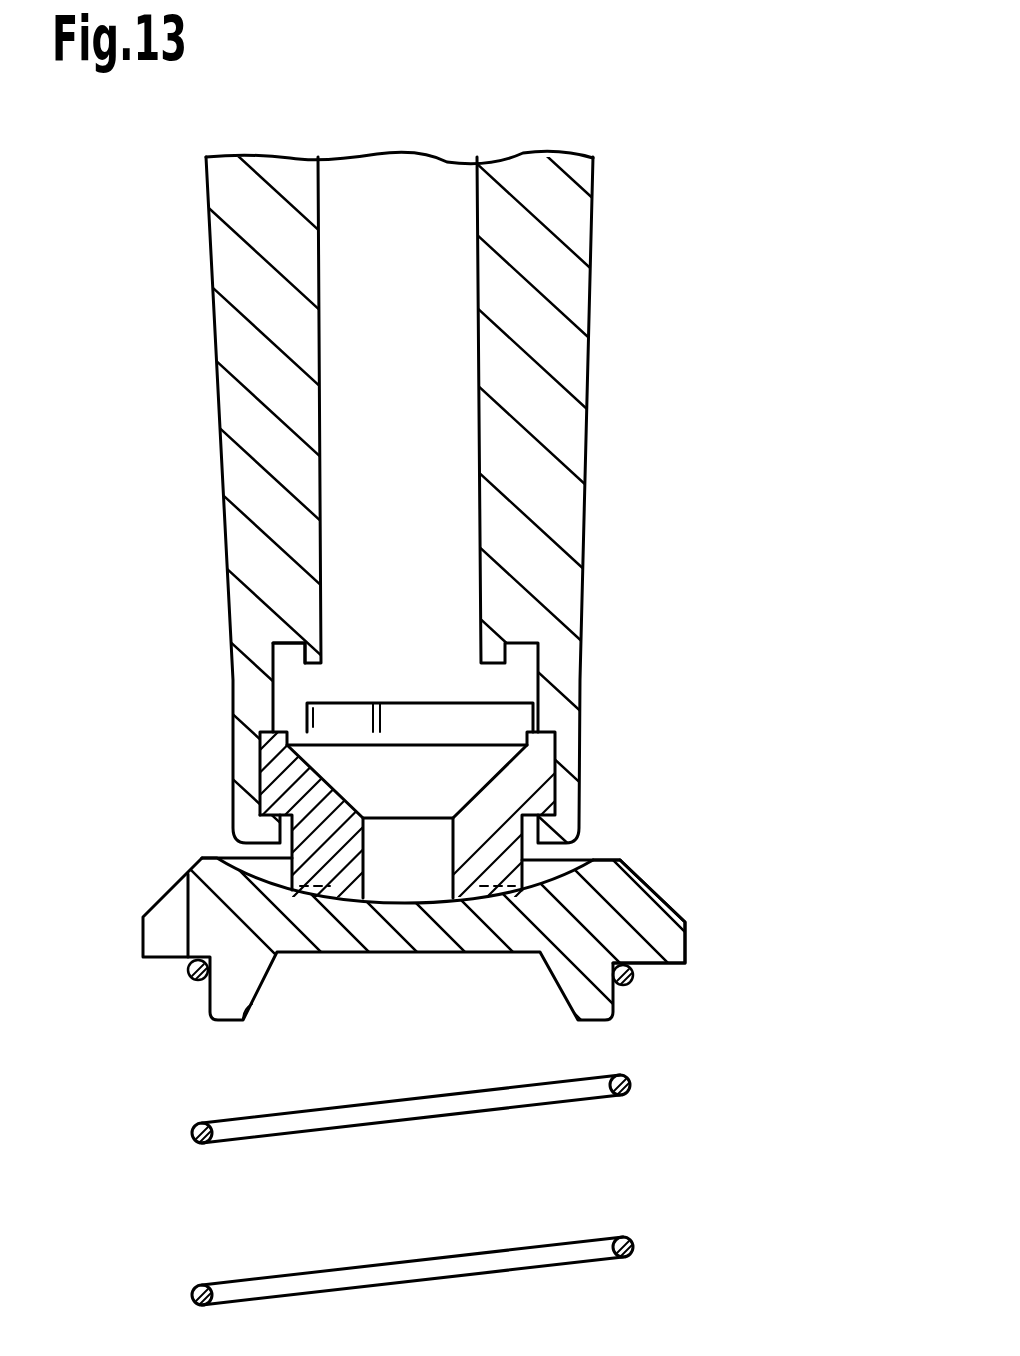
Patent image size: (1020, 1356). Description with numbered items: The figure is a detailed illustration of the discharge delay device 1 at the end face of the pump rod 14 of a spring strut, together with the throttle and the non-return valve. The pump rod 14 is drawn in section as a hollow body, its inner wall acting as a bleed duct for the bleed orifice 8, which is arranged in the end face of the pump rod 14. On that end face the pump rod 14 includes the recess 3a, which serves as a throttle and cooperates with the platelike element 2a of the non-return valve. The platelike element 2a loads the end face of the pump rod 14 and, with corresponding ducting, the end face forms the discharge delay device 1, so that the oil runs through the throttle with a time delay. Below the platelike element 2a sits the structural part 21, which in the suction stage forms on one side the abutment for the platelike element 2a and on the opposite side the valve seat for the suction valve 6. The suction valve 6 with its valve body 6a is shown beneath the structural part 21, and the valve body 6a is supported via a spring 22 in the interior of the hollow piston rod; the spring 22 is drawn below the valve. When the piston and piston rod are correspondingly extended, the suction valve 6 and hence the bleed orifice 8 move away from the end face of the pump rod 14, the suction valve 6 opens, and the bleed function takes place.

The discharge delay device 1 is at (600, 757).
The pump rod 14 is at (570, 338).
The recess 3a is at (290, 653).
The platelike element 2a is at (498, 715).
The structural part 21 is at (498, 837).
The bleed orifice 8 is at (387, 852).
The suction valve 6 is at (690, 888).
The valve body 6a is at (686, 945).
The spring 22 is at (630, 1084).